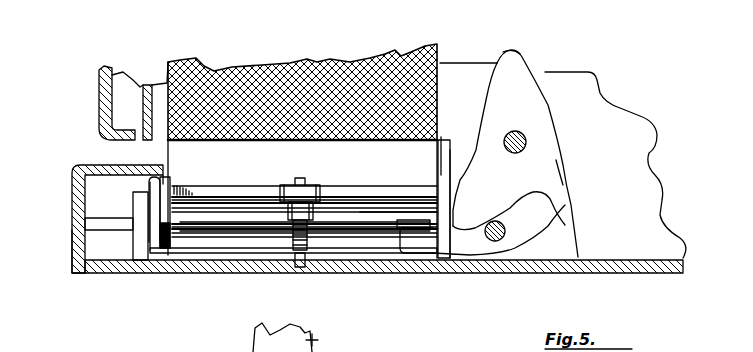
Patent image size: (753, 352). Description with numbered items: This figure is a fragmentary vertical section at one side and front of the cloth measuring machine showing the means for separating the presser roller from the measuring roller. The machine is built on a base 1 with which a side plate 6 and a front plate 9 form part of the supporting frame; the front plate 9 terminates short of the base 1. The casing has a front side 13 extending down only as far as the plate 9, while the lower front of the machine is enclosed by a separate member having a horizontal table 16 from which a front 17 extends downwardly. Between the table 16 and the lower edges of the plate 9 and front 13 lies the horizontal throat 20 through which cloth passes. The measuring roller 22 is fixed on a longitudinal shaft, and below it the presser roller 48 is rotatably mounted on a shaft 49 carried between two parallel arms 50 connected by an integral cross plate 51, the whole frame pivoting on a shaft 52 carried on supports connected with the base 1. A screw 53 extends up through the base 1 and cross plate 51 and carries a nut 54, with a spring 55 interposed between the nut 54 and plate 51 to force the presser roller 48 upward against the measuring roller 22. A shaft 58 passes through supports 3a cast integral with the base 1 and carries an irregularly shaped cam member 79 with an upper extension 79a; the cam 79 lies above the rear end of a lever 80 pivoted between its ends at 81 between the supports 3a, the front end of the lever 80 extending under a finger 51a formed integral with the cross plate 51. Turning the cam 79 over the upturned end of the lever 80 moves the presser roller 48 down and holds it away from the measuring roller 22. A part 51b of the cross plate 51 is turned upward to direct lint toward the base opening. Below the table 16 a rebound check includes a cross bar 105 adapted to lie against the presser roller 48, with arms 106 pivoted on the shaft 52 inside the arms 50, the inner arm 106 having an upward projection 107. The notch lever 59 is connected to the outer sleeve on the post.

The base 1 is at (612, 268).
The supports 3a is at (558, 165).
The side plate 6 is at (555, 83).
The front plate 9 is at (147, 97).
The front side 13 is at (98, 107).
The table 16 is at (124, 178).
The front 17 is at (75, 227).
The throat 20 is at (113, 152).
The measuring roller 22 is at (297, 78).
The presser roller 48 is at (177, 154).
The shaft 49 is at (452, 178).
The arms 50 is at (158, 212).
The cross plate 51 is at (263, 254).
The finger 51a is at (415, 228).
The upturned part 51b is at (378, 203).
The shaft 52 is at (238, 222).
The screw 53 is at (298, 262).
The nut 54 is at (303, 190).
The spring 55 is at (322, 222).
The shaft 58 is at (526, 137).
The lever 59 is at (297, 337).
The cam member 79 is at (535, 163).
The upper extension 79a is at (513, 62).
The lever 80 is at (572, 236).
The pivot 81 is at (495, 242).
The cross bar 105 is at (228, 187).
The arms 106 is at (170, 192).
The upward projection 107 is at (445, 140).